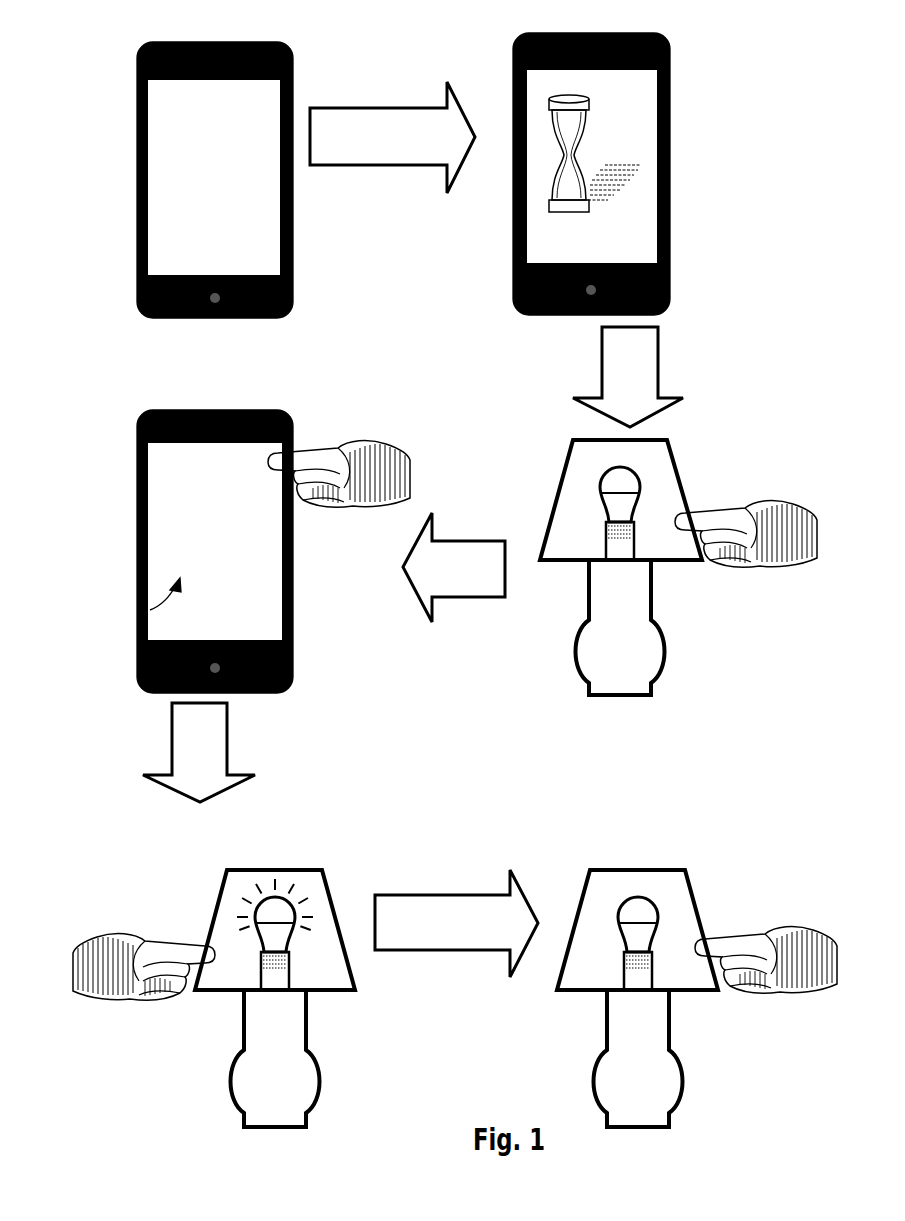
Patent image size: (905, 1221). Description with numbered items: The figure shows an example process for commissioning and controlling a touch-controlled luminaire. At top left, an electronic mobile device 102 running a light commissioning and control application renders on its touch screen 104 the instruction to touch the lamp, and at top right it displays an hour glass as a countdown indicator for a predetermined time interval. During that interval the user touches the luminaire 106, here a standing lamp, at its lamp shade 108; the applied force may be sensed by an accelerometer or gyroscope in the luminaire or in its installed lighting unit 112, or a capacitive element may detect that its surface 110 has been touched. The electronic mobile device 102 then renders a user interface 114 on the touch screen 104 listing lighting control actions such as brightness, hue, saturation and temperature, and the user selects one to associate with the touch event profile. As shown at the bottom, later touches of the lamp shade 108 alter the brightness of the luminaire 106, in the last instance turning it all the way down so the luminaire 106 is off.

The electronic mobile device 102 is at (292, 293).
The touch screen 104 is at (257, 235).
The luminaire 106 is at (489, 776).
The lamp shade 108 is at (688, 503).
The surface 110 is at (667, 645).
The lighting unit 112 is at (618, 467).
The user interface 114 is at (150, 610).